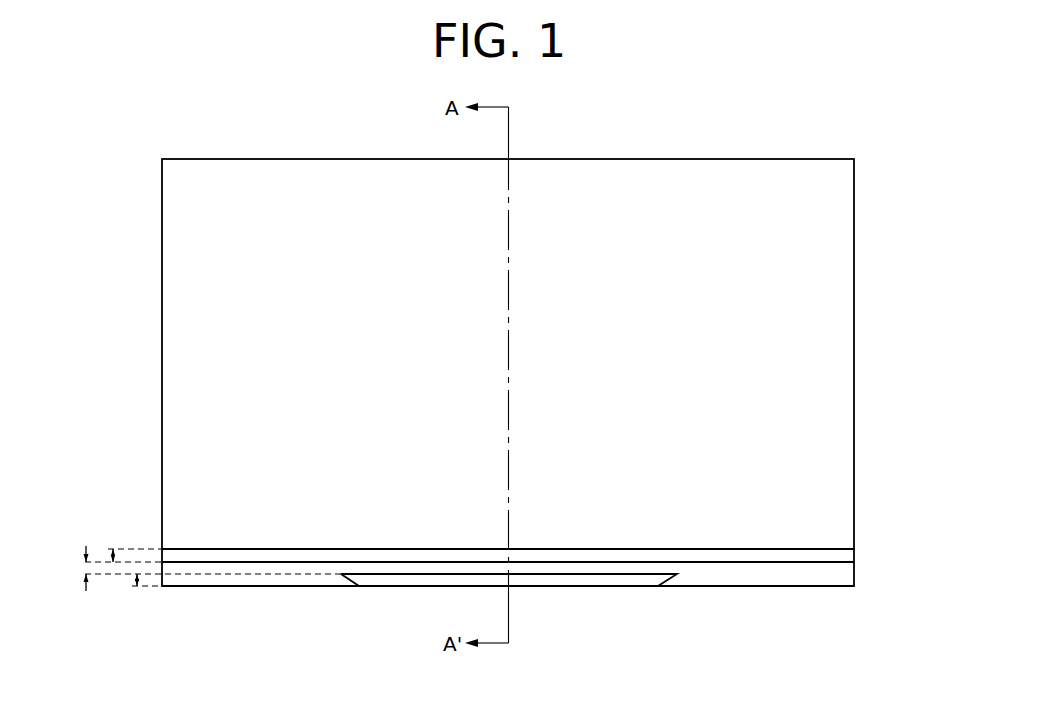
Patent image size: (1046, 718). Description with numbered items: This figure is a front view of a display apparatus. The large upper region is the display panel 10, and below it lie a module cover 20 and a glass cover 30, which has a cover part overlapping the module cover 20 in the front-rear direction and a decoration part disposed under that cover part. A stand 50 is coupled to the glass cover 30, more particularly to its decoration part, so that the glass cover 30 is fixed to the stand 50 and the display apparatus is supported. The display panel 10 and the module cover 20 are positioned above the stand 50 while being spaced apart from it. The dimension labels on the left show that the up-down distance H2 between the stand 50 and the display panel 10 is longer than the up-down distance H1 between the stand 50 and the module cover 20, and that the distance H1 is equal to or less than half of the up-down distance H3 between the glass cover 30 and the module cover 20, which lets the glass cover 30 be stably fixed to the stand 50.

The display panel 10 is at (833, 360).
The module cover 20 is at (549, 556).
The glass cover 30 is at (549, 579).
The stand 50 is at (605, 598).
The up-down distance between the stand and the module cover H1 is at (75, 568).
The up-down distance between the stand and the display panel H2 is at (111, 555).
The up-down distance between the glass cover and the module cover H3 is at (135, 581).